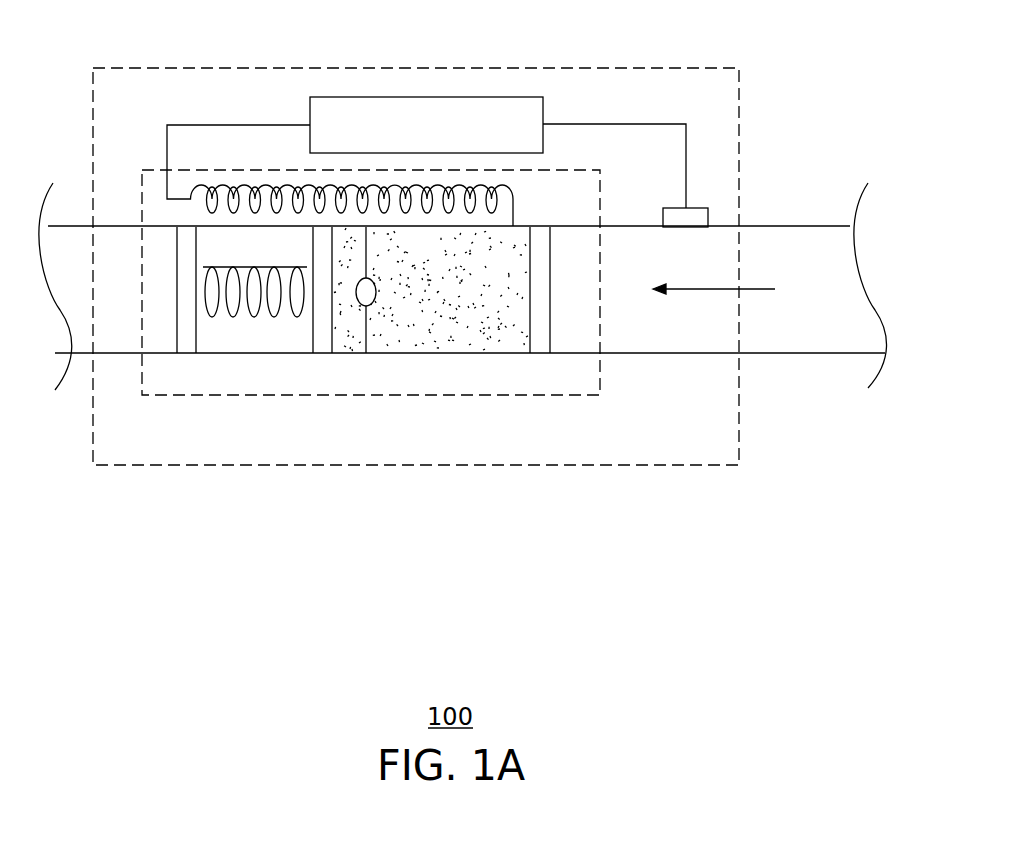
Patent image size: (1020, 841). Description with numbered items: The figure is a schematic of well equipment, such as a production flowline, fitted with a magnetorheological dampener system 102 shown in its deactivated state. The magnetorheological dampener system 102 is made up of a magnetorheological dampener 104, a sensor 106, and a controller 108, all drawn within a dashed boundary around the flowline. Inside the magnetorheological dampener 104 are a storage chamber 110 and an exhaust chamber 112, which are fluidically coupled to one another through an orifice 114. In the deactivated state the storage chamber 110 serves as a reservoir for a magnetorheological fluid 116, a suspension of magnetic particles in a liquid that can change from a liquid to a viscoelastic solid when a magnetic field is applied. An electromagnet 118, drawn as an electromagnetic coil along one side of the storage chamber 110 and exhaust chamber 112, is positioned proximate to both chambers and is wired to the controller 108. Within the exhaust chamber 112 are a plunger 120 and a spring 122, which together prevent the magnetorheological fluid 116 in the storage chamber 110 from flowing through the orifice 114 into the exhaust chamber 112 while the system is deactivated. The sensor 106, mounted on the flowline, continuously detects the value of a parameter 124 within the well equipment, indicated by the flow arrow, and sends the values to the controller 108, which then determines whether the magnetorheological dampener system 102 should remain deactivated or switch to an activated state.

The magnetorheological dampener system 102 is at (310, 465).
The magnetorheological dampener 104 is at (373, 395).
The sensor 106 is at (698, 208).
The controller 108 is at (392, 97).
The storage chamber 110 is at (442, 354).
The exhaust chamber 112 is at (348, 354).
The orifice 114 is at (358, 280).
The magnetorheological fluid 116 is at (487, 318).
The electromagnet 118 is at (288, 185).
The plunger 120 is at (322, 356).
The spring 122 is at (270, 318).
The parameter 124 is at (755, 289).